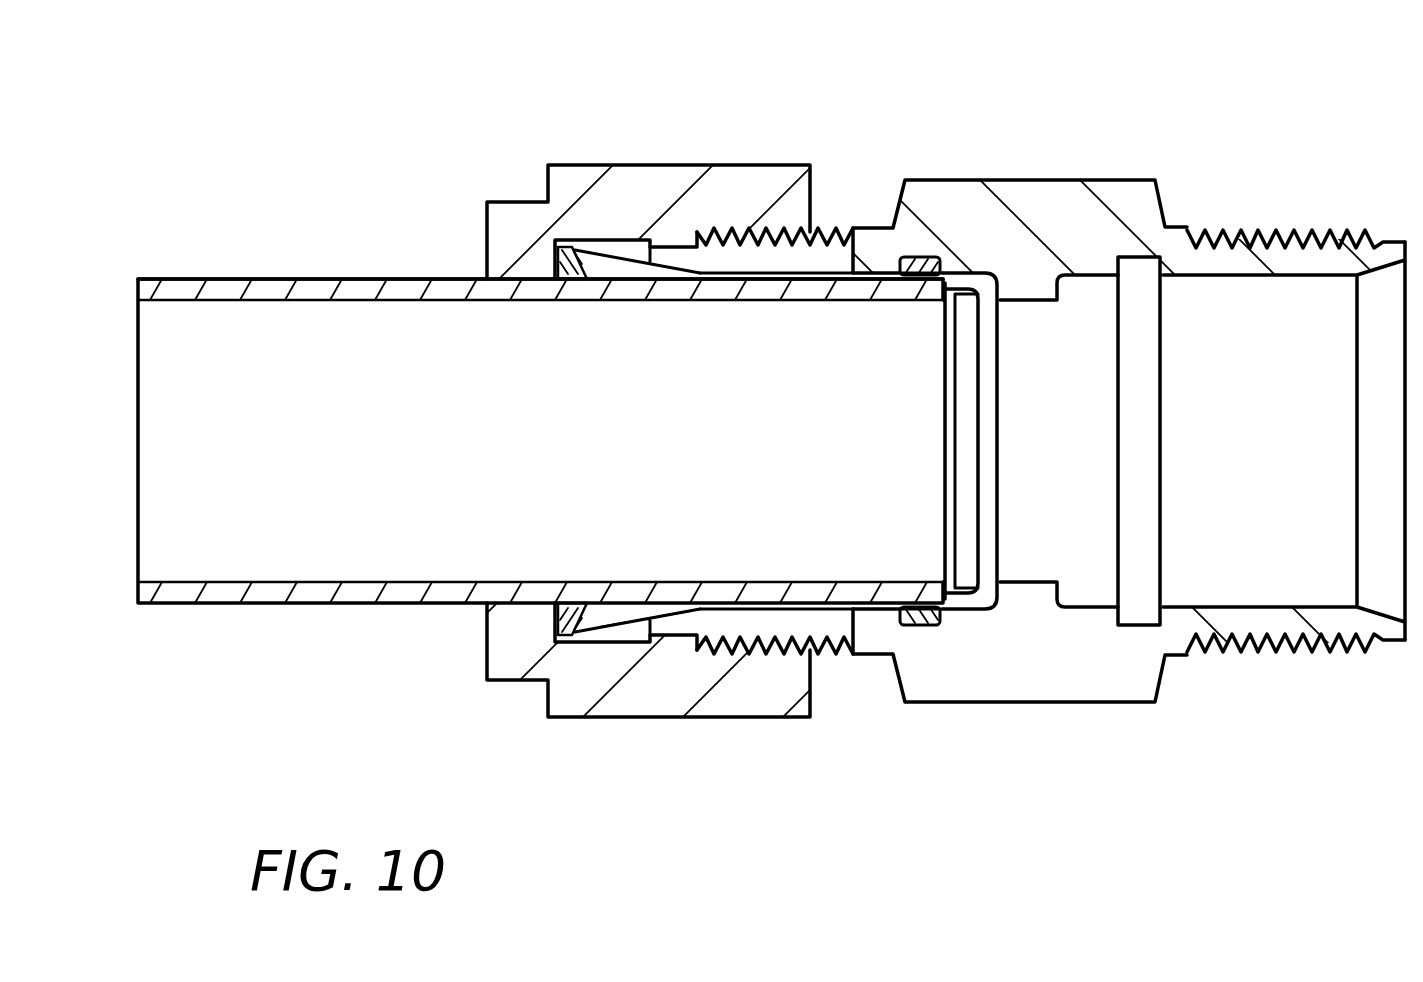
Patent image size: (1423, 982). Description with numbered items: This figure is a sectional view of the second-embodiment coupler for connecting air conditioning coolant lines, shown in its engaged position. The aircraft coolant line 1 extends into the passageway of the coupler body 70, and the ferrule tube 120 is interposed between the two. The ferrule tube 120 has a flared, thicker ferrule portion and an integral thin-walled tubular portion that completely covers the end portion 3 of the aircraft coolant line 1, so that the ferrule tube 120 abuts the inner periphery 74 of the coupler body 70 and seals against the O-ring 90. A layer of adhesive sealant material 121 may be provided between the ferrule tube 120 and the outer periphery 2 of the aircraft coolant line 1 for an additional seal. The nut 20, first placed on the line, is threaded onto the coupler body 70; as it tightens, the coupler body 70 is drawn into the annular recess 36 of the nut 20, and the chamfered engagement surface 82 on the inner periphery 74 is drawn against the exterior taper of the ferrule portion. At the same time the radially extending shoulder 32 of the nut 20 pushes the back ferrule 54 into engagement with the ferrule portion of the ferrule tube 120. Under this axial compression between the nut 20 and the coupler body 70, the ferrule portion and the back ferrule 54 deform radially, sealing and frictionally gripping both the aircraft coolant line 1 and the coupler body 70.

The aircraft coolant line 1 is at (140, 340).
The outer periphery of the aircraft coolant line 2 is at (265, 279).
The end portion of the aircraft coolant line 3 is at (857, 295).
The nut 20 is at (712, 162).
The radially extending shoulder 32 is at (560, 605).
The annular recess 36 is at (625, 633).
The back ferrule 54 is at (562, 262).
The coupler body 70 is at (1088, 172).
The inner periphery of the coupler body 74 is at (987, 610).
The chamfered engagement surface 82 is at (665, 612).
The O-ring 90 is at (920, 260).
The ferrule tube 120 is at (607, 250).
The adhesive sealant material 121 is at (848, 610).